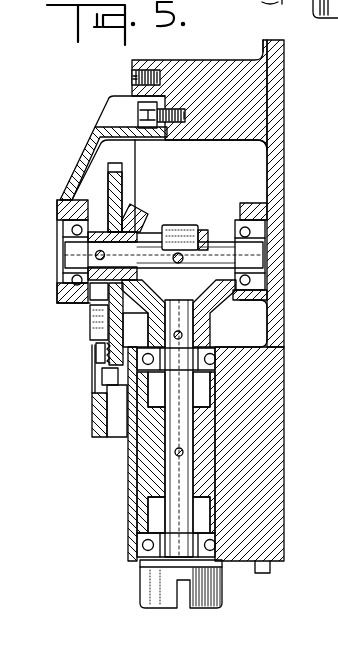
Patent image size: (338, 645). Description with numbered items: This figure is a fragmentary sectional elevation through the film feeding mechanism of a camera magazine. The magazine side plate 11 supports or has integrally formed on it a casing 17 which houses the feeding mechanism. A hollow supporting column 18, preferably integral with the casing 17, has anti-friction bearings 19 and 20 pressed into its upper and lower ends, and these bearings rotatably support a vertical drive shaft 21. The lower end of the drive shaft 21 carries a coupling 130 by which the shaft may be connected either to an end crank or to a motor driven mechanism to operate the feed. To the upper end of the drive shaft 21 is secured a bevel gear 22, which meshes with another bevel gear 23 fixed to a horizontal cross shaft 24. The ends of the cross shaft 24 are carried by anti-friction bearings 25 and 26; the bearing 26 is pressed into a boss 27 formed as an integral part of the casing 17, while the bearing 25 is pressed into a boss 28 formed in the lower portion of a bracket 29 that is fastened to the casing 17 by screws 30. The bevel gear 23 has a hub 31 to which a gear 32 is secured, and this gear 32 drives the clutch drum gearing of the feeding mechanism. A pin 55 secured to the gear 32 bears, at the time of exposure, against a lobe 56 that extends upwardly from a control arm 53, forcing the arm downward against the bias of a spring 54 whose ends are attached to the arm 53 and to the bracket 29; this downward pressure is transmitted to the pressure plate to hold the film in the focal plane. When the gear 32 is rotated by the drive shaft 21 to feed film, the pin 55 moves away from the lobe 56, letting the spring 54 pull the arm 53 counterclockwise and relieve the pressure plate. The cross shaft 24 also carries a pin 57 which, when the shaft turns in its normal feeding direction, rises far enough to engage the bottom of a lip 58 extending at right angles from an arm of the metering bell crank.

The magazine side plate 11 is at (285, 42).
The casing 17 is at (197, 66).
The hollow supporting column 18 is at (129, 508).
The anti-friction bearing 19 is at (220, 360).
The anti-friction bearing 20 is at (220, 542).
The drive shaft 21 is at (186, 437).
The bevel gear 22 is at (200, 312).
The bevel gear 23 is at (137, 212).
The cross shaft 24 is at (217, 240).
The anti-friction bearing 25 is at (63, 240).
The anti-friction bearing 26 is at (267, 238).
The boss 27 is at (242, 205).
The boss 28 is at (64, 310).
The bracket 29 is at (80, 158).
The screws 30 is at (138, 108).
The hub 31 is at (107, 231).
The gear 32 is at (120, 172).
The control arm 53 is at (93, 405).
The spring 54 is at (105, 371).
The pin 55 is at (91, 327).
The lobe 56 is at (96, 352).
The pin 57 is at (179, 264).
The lip 58 is at (176, 225).
The coupling 130 is at (157, 583).